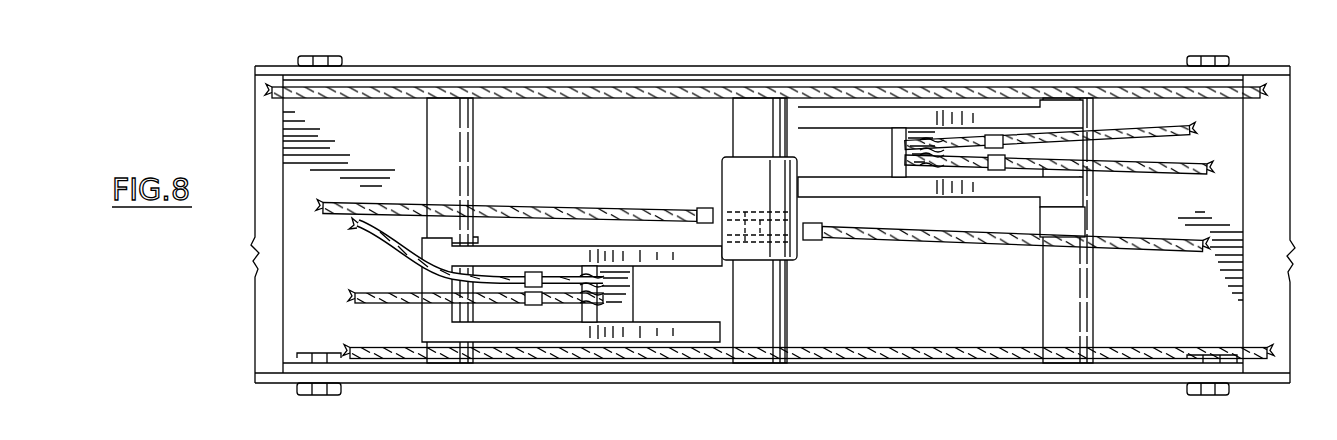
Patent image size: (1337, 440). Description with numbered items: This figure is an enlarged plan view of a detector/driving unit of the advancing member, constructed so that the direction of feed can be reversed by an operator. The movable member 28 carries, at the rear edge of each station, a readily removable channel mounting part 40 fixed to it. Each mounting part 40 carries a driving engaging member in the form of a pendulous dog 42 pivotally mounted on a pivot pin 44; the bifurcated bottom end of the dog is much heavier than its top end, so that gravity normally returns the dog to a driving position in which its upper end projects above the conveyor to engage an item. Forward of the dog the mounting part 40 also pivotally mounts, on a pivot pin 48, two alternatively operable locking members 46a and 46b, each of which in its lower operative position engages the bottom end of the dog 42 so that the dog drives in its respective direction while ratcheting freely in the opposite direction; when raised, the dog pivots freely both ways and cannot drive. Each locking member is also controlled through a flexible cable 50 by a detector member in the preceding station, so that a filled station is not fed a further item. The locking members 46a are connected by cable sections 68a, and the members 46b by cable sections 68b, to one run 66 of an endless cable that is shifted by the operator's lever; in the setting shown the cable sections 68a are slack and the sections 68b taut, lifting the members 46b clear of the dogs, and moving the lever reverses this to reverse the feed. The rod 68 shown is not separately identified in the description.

The movable member 28 is at (640, 382).
The channel mounting part 40 is at (520, 85).
The pendulous dog 42 is at (783, 268).
The pivot pin 44 is at (757, 340).
The locking member 46a is at (538, 328).
The alternatively operable locking member 46b is at (908, 120).
The pivot pin 48 is at (455, 178).
The flexible cable 50 is at (650, 208).
The run of endless flexible cable 66 is at (603, 97).
The lower threaded rod 68 is at (945, 350).
The cable section 68a is at (365, 240).
The cable section 68b is at (1190, 128).